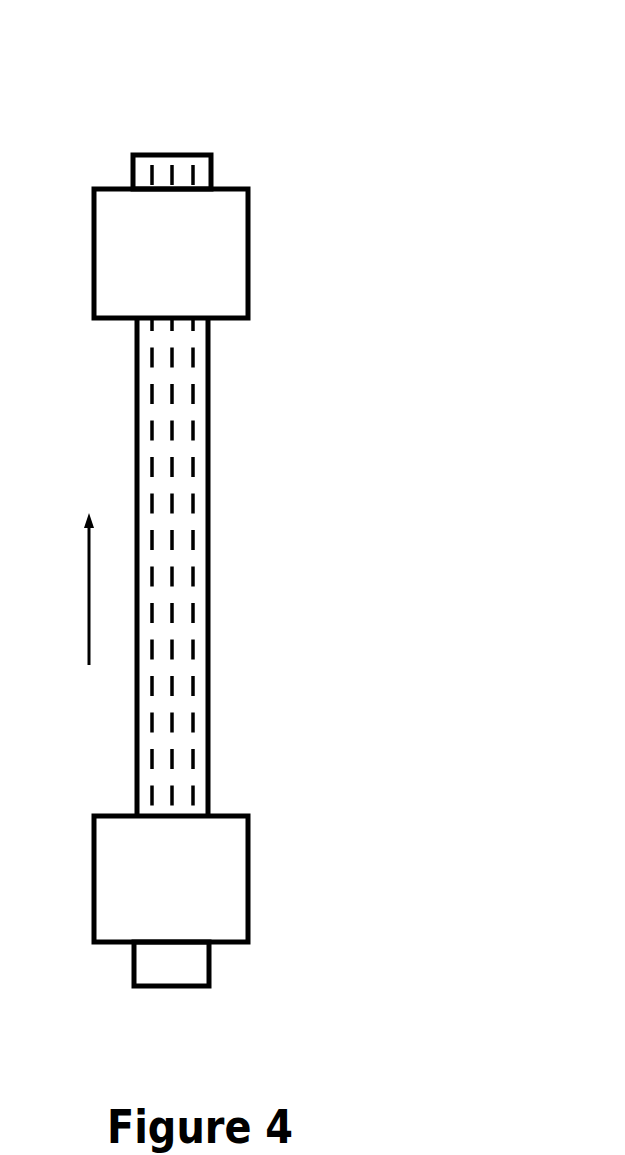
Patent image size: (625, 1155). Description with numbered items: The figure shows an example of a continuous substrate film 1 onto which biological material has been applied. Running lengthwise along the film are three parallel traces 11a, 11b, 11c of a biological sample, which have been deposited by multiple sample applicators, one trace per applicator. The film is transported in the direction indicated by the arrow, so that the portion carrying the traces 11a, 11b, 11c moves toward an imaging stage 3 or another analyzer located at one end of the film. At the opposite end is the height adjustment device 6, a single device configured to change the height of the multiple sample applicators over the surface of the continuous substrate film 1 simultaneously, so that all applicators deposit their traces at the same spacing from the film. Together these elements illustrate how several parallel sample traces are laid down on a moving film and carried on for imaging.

The continuous substrate film 1 is at (200, 408).
The imaging stage 3 is at (230, 188).
The height adjustment device 6 is at (92, 933).
The trace of biological sample 11a is at (155, 527).
The trace of biological sample 11b is at (175, 590).
The trace of biological sample 11c is at (197, 698).